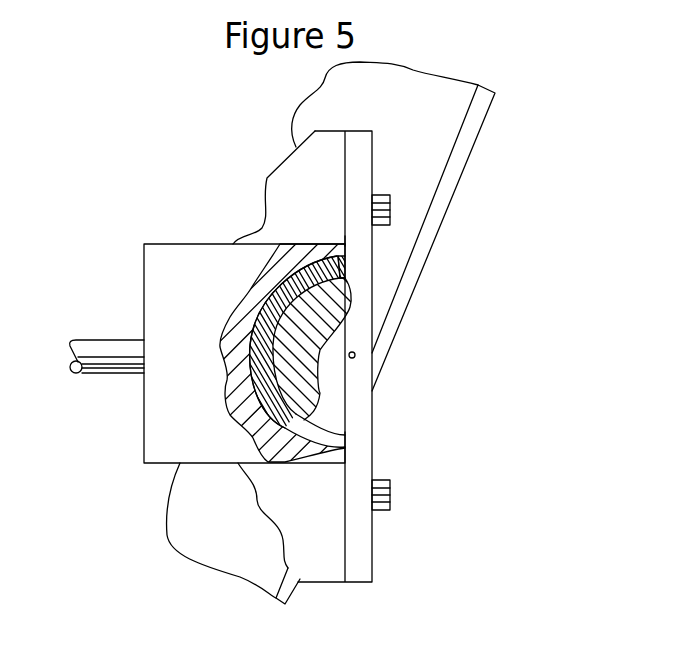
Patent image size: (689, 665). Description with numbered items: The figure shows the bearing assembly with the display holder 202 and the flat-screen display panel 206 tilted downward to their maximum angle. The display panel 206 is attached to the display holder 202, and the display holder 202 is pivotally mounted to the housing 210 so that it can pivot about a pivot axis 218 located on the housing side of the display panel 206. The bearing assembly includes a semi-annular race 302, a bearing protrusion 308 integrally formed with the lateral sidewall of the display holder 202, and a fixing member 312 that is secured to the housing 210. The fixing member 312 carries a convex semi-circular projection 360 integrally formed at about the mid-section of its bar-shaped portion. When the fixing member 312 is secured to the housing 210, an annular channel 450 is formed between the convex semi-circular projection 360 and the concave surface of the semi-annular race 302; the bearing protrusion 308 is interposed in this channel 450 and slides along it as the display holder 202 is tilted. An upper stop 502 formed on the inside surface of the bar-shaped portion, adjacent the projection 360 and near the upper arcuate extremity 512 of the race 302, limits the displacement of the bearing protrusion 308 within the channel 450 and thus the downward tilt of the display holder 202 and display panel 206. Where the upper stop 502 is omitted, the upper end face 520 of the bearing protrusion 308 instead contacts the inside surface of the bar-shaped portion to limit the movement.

The display holder 202 is at (437, 119).
The flat-screen display panel 206 is at (457, 186).
The housing 210 is at (302, 179).
The pivot axis 218 is at (356, 358).
The semi-annular race 302 is at (172, 428).
The bearing protrusion 308 is at (258, 312).
The fixing member 312 is at (366, 420).
The convex semi-circular projection 360 is at (318, 379).
The annular channel 450 is at (343, 441).
The upper stop 502 is at (347, 264).
The upper arcuate extremity 512 is at (330, 230).
The upper end face 520 is at (343, 270).